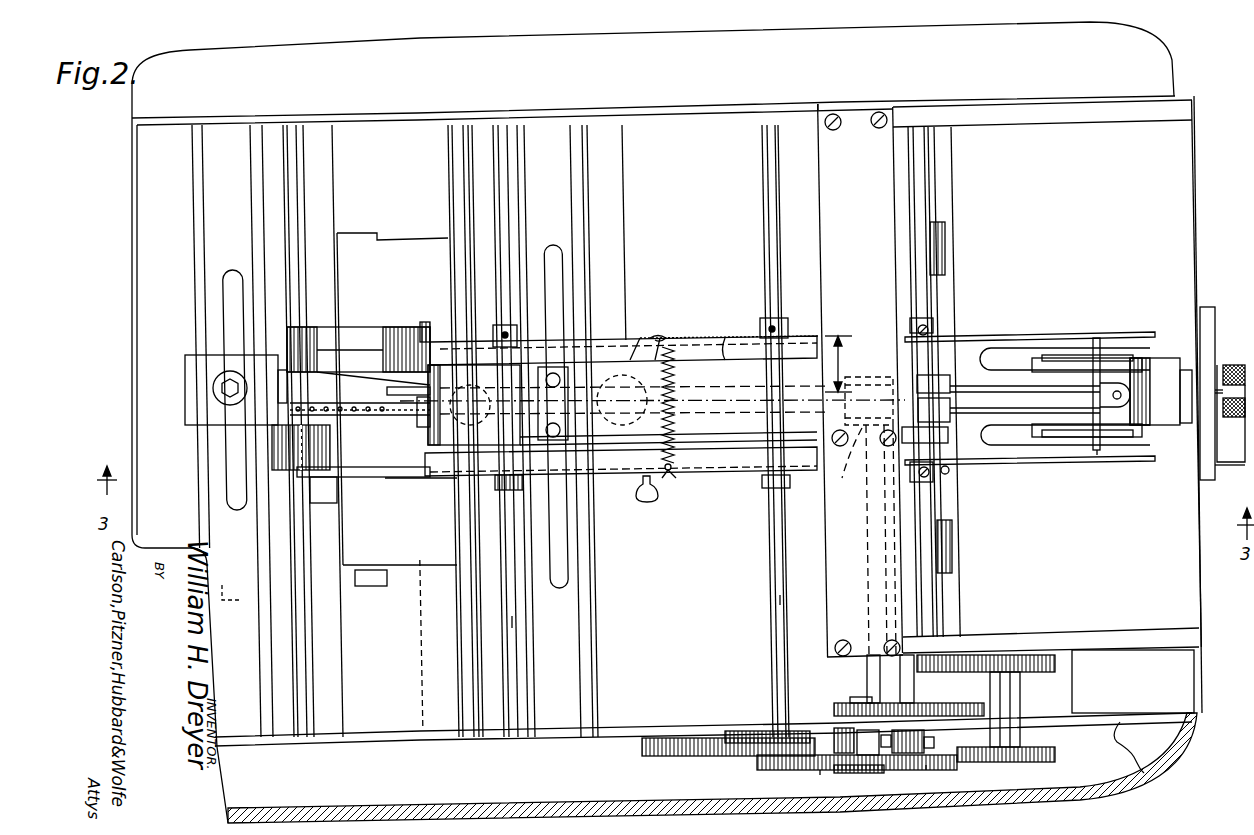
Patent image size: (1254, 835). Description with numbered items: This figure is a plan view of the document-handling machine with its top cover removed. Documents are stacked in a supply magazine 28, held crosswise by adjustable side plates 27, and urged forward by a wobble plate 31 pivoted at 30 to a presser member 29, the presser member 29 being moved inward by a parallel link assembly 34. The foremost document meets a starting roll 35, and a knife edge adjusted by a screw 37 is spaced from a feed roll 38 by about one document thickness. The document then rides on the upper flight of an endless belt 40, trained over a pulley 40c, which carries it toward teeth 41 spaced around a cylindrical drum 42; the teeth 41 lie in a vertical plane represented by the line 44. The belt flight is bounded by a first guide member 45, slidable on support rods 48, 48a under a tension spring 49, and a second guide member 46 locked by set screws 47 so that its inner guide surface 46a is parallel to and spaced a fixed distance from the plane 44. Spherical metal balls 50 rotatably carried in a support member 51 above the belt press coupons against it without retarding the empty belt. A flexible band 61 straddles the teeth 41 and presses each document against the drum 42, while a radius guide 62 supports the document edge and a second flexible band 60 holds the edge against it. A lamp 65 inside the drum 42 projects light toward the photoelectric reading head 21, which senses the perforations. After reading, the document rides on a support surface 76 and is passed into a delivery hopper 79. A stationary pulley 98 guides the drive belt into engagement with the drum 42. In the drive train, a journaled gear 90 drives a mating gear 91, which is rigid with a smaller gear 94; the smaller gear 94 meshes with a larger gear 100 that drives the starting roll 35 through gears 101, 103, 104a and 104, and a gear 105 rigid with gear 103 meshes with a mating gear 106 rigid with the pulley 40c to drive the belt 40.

The support surface 76 is at (685, 233).
The stationary pulley 98 is at (283, 473).
The radius guide 62 is at (320, 327).
The second flexible band 60 is at (318, 370).
The lamp 65 is at (348, 382).
The photoelectric reading head 21 is at (283, 383).
The teeth 41 is at (364, 412).
The flexible band 61 is at (390, 420).
The cylindrical drum 42 is at (349, 468).
The set screws 47 is at (505, 338).
The spherical metal balls 50 is at (735, 377).
The plane of the teeth 44 is at (700, 410).
The tension spring 49 is at (657, 336).
The inner guide surface 46a is at (687, 343).
The second guide member 46 is at (737, 343).
The first guide member 45 is at (697, 462).
The support member 51 is at (612, 428).
The endless belt 40 is at (813, 380).
The feed roll 38 is at (910, 380).
The pulley 40c is at (862, 540).
The starting roll 35 is at (953, 377).
The adjustable side plates 27 is at (1020, 334).
The parallel link assembly 34 is at (1078, 352).
The supply magazine 28 is at (1122, 325).
The presser member 29 is at (1165, 370).
The pivot 30 is at (1117, 400).
The wobble plate 31 is at (1092, 452).
The screw 37 is at (1237, 365).
The delivery hopper 79 is at (1230, 465).
The support rod 48 is at (513, 622).
The support rod 48a is at (780, 600).
The journaled gear 90 is at (660, 755).
The mating gear 91 is at (790, 742).
The larger gear 100 is at (851, 777).
The gear 101 is at (820, 772).
The gear 103 is at (926, 767).
The smaller gear 94 is at (836, 767).
The gear 104 is at (951, 657).
The gear 104a is at (1041, 672).
The gear 105 is at (827, 710).
The mating gear 106 is at (861, 700).